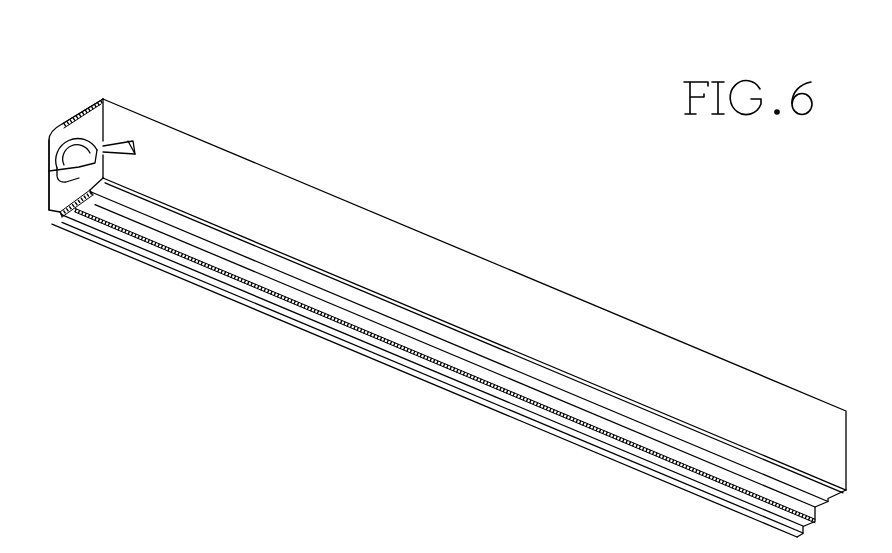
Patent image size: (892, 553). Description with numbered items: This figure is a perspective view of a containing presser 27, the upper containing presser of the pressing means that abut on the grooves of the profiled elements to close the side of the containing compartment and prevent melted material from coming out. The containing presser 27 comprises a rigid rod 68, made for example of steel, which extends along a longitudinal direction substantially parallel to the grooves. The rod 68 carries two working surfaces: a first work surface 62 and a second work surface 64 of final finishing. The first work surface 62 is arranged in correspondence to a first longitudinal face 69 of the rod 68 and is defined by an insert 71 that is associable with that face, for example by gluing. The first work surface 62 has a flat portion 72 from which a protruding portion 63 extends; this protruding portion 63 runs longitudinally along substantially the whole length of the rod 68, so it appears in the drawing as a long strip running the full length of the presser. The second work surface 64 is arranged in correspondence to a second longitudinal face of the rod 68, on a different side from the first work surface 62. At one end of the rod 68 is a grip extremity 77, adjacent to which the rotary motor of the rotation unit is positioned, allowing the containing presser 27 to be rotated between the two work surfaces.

The containing presser 27 is at (412, 210).
The first work surface 62 is at (46, 224).
The protruding portion 63 is at (204, 267).
The second work surface 64 is at (76, 112).
The rod 68 is at (543, 318).
The first longitudinal face 69 is at (261, 258).
The insert 71 is at (70, 228).
The flat portion 72 is at (119, 258).
The grip extremity 77 is at (133, 146).